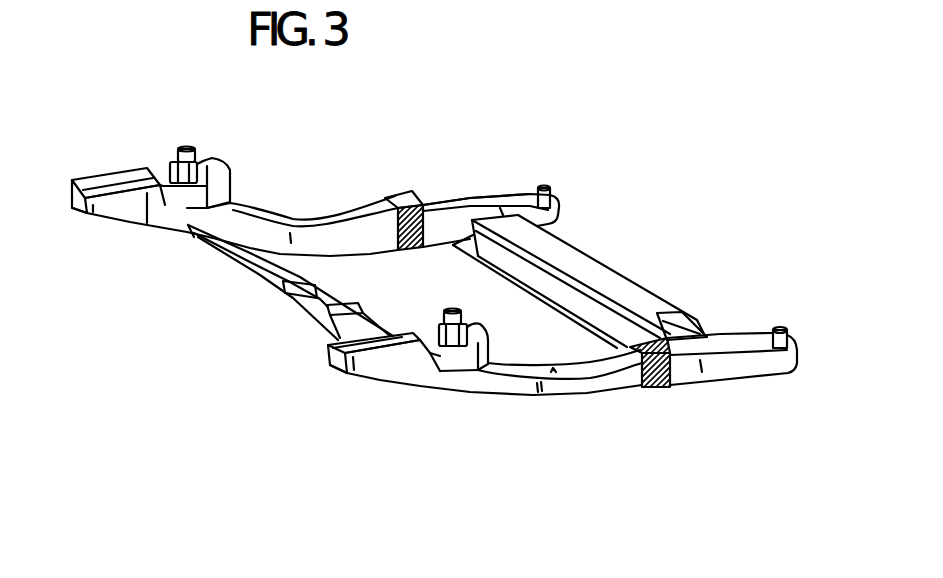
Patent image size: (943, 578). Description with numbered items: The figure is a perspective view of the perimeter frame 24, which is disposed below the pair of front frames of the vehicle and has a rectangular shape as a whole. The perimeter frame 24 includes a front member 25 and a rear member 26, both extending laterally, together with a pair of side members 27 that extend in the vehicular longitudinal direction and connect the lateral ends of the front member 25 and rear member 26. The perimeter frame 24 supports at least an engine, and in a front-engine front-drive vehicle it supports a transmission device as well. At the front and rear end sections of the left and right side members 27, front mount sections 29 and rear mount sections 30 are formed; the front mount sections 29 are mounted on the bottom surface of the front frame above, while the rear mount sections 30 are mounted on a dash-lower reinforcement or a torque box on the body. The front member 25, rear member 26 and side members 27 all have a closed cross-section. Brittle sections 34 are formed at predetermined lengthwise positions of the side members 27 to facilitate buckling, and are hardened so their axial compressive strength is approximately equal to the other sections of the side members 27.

The perimeter frame 24 is at (470, 178).
The front member 25 is at (218, 258).
The rear member 26 is at (636, 283).
The side member 27 is at (453, 203).
The front mount section 29 is at (174, 160).
The rear mount section 30 is at (553, 197).
The brittle section 34 is at (398, 194).